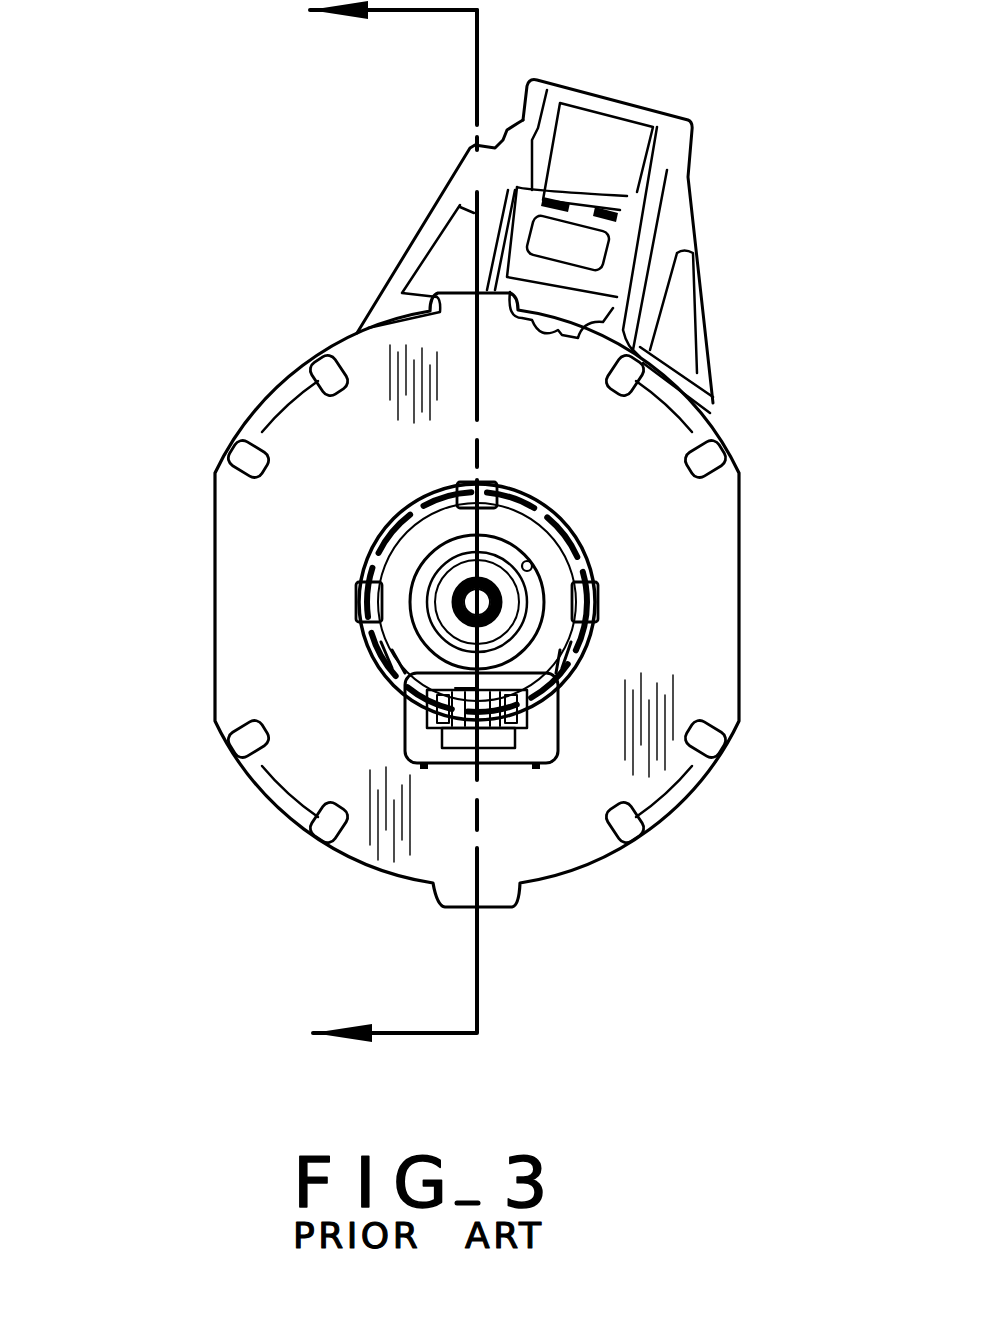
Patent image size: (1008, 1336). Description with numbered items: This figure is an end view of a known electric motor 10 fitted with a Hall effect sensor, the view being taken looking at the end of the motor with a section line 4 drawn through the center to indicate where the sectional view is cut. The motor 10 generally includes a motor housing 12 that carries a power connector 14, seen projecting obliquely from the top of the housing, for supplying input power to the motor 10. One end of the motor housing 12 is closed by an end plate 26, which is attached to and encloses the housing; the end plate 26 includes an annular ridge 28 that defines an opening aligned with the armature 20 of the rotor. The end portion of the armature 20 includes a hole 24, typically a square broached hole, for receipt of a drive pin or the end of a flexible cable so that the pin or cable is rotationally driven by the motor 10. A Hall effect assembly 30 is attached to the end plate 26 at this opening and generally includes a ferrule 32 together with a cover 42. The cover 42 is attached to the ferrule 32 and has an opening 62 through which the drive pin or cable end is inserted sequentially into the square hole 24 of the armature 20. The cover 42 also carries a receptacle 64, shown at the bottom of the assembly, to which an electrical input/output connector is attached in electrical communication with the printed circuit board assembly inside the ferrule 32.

The section line 4 is at (370, 529).
The motor 10 is at (140, 380).
The motor housing 12 is at (320, 364).
The power connector 14 is at (645, 196).
The armature 20 is at (462, 600).
The hole 24 is at (477, 602).
The end plate 26 is at (617, 454).
The annular ridge 28 is at (562, 513).
The Hall effect assembly 30 is at (335, 637).
The ferrule 32 is at (588, 594).
The cover 42 is at (540, 658).
The opening 62 is at (531, 565).
The receptacle 64 is at (520, 732).